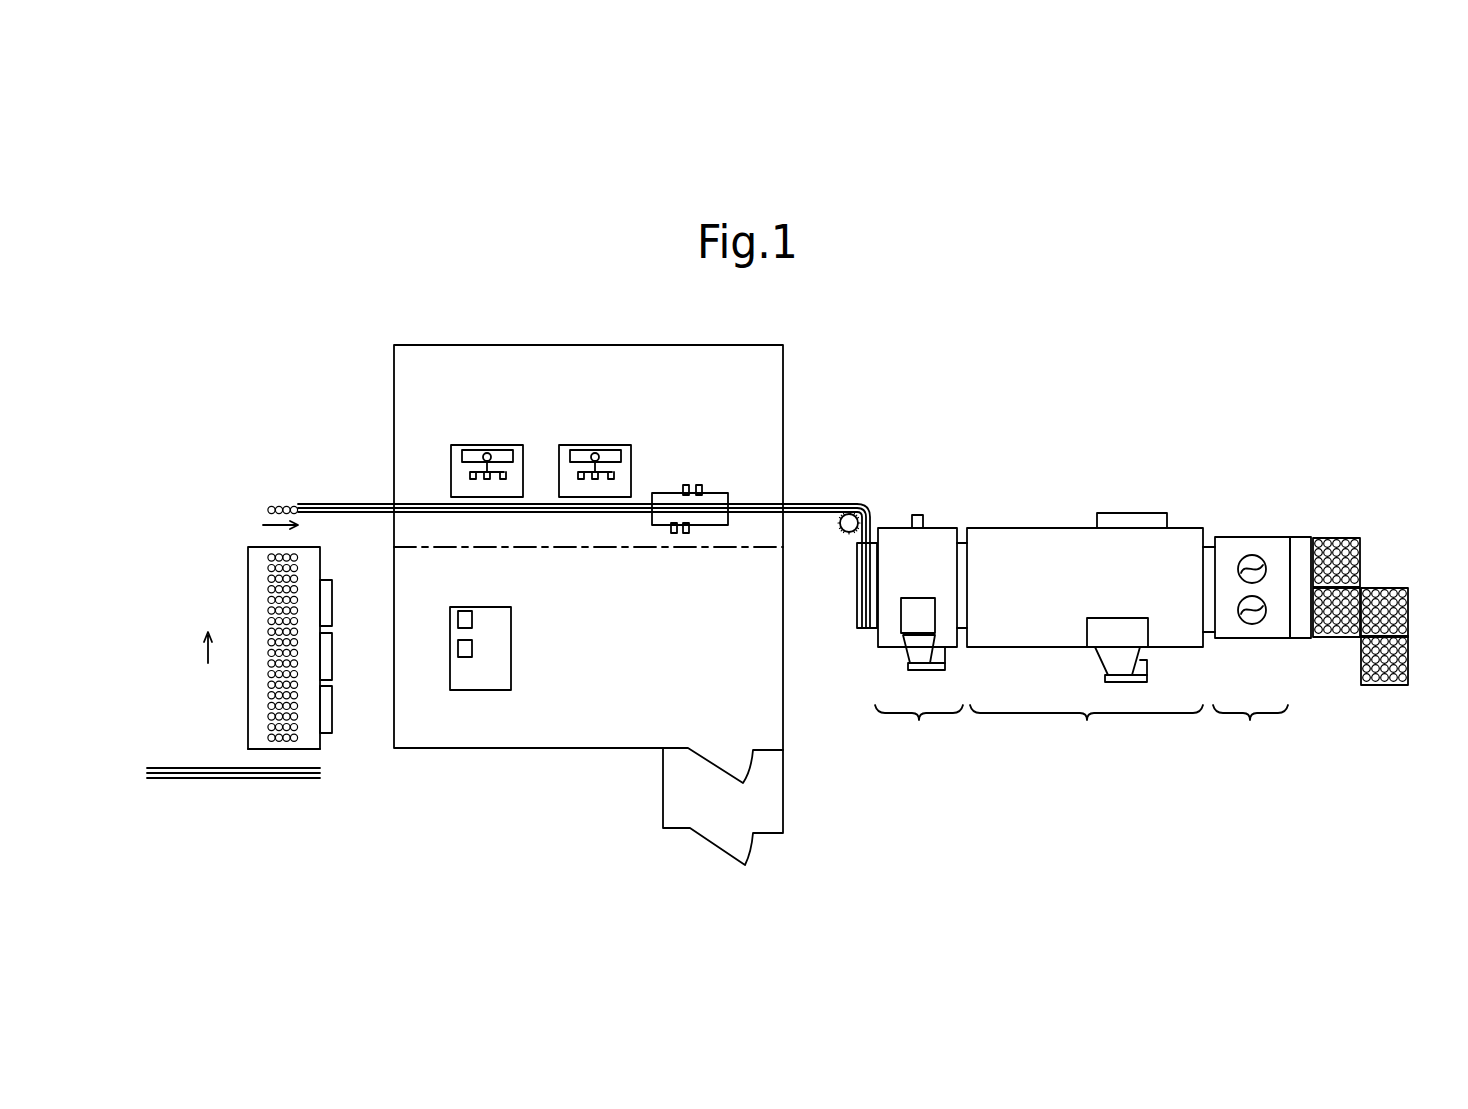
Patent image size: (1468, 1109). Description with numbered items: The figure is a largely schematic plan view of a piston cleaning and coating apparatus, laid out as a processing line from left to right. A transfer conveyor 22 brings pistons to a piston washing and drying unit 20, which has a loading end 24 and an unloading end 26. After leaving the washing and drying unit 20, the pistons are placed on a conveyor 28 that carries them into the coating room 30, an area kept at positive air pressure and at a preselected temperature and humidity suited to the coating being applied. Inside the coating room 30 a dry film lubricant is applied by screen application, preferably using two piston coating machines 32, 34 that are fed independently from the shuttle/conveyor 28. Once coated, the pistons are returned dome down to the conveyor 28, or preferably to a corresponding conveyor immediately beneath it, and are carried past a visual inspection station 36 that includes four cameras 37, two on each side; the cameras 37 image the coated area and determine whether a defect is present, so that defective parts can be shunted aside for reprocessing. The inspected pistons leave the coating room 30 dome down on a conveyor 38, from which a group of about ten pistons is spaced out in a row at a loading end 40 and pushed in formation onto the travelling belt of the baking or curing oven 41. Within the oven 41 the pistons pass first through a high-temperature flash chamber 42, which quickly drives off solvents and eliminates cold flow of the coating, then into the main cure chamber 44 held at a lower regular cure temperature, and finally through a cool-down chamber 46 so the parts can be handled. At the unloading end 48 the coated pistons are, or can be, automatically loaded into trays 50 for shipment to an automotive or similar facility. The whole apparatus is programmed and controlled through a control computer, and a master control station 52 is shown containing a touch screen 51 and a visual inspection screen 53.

The piston washing and drying unit 20 is at (248, 583).
The transfer conveyor 22 is at (228, 778).
The loading end 24 is at (258, 750).
The unloading end 26 is at (262, 548).
The conveyor 28 is at (367, 505).
The coating room 30 is at (394, 387).
The piston coating machine 32 is at (475, 450).
The piston coating machine 34 is at (585, 450).
The visual inspection station 36 is at (722, 493).
The cameras 37 is at (685, 485).
The conveyor 38 is at (822, 503).
The loading end 40 is at (857, 590).
The baking or curing oven 41 is at (1052, 477).
The high-temperature flash chamber 42 is at (919, 635).
The main cure chamber 44 is at (1085, 634).
The cool-down chamber 46 is at (1251, 646).
The unloading end 48 is at (1298, 632).
The trays 50 is at (1330, 538).
The touch screen 51 is at (463, 660).
The master control station 52 is at (512, 683).
The visual inspection screen 53 is at (456, 618).